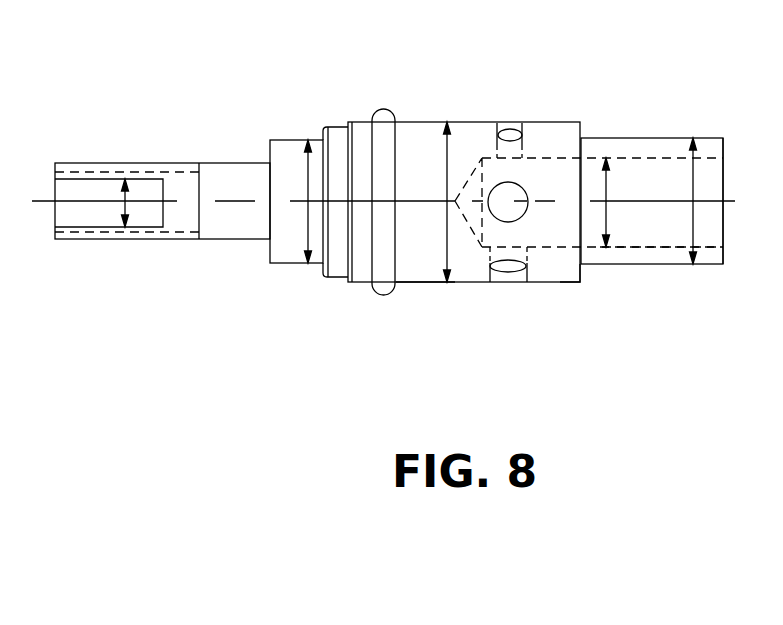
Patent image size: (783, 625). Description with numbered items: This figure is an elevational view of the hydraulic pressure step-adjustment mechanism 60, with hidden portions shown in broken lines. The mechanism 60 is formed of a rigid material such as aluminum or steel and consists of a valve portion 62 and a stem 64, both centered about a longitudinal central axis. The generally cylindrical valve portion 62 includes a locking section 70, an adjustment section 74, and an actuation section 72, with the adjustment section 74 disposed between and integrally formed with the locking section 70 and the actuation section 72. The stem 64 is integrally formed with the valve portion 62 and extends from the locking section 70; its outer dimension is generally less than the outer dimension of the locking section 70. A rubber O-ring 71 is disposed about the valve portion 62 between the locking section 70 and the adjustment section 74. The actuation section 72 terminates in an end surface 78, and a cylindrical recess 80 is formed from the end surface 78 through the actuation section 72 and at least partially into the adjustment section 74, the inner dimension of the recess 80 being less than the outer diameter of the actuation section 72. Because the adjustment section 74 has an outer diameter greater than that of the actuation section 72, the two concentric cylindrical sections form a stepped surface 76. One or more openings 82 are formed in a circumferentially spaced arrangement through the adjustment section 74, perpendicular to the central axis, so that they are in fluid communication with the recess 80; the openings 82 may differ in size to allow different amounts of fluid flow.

The pressure step-adjustment mechanism 60 is at (385, 177).
The valve portion 62 is at (582, 118).
The stem 64 is at (210, 163).
The locking section 70 is at (293, 140).
The rubber O-ring 71 is at (382, 109).
The actuation section 72 is at (652, 138).
The adjustment section 74 is at (420, 283).
The stepped surface 76 is at (594, 272).
The end surface 78 is at (724, 255).
The cylindrical recess 80 is at (645, 240).
The openings 82 is at (505, 133).